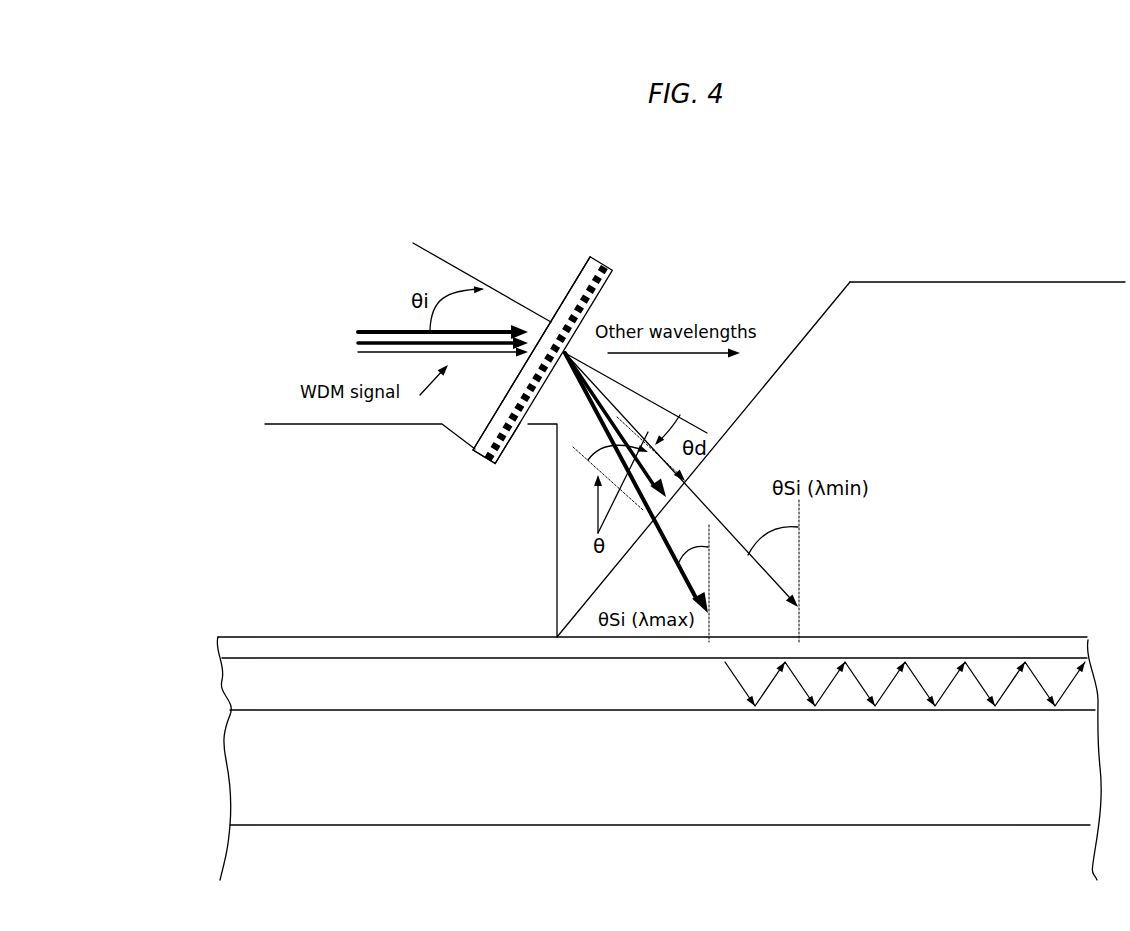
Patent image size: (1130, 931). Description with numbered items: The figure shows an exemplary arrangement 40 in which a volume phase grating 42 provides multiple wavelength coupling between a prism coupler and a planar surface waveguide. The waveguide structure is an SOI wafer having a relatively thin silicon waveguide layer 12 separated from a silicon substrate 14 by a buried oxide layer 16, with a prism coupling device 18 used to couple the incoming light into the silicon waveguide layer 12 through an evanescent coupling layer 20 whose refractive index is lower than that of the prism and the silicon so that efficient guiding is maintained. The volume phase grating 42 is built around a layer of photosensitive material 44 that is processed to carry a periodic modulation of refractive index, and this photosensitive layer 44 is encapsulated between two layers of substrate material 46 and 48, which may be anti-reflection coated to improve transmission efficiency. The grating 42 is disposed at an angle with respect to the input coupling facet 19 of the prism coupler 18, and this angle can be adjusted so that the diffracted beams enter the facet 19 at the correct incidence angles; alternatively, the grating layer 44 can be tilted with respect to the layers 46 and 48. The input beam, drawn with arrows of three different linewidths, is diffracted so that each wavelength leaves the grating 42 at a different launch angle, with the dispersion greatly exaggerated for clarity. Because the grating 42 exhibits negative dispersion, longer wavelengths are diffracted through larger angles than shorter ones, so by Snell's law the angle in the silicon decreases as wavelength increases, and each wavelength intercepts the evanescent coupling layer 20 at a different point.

The silicon waveguide layer 12 is at (230, 687).
The silicon substrate 14 is at (243, 882).
The buried oxide layer 16 is at (245, 798).
The prism coupling device 18 is at (1028, 303).
The input coupling facet 19 is at (828, 302).
The evanescent coupling layer 20 is at (283, 650).
The arrangement 40 is at (616, 254).
The volume phase grating 42 is at (597, 279).
The layer of photosensitive material 44 is at (484, 441).
The substrate material layer 46 is at (497, 462).
The substrate material layer 48 is at (583, 282).